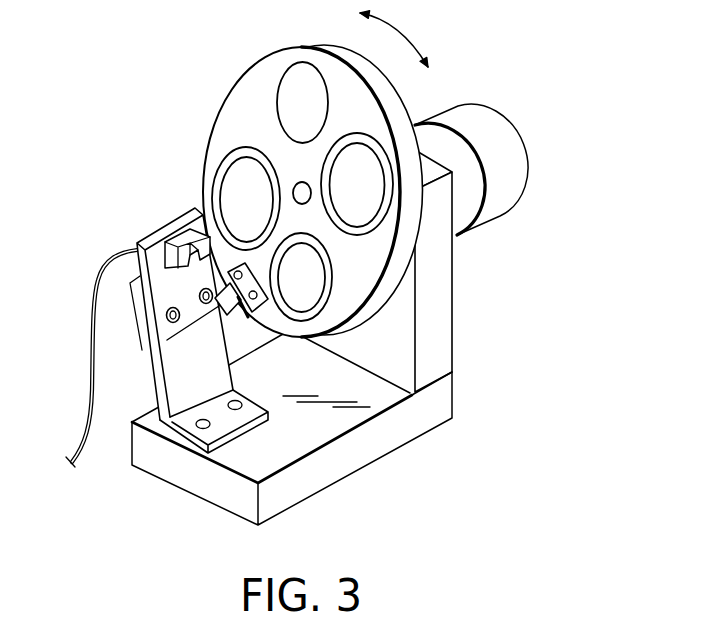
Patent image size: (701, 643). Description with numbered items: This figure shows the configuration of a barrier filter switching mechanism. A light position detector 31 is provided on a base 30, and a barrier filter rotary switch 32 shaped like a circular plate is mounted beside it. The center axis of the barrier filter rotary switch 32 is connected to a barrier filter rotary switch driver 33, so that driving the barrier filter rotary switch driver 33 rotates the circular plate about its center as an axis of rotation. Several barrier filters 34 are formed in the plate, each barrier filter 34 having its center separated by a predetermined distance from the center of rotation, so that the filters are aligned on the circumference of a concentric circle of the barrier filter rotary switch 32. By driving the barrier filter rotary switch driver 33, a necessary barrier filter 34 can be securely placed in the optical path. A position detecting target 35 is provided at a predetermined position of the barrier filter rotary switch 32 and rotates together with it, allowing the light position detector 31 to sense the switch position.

The base 30 is at (453, 393).
The light position detector 31 is at (170, 227).
The barrier filter rotary switch 32 is at (250, 114).
The barrier filter rotary switch driver 33 is at (505, 127).
The barrier filter 34 is at (297, 88).
The position detecting target 35 is at (238, 288).